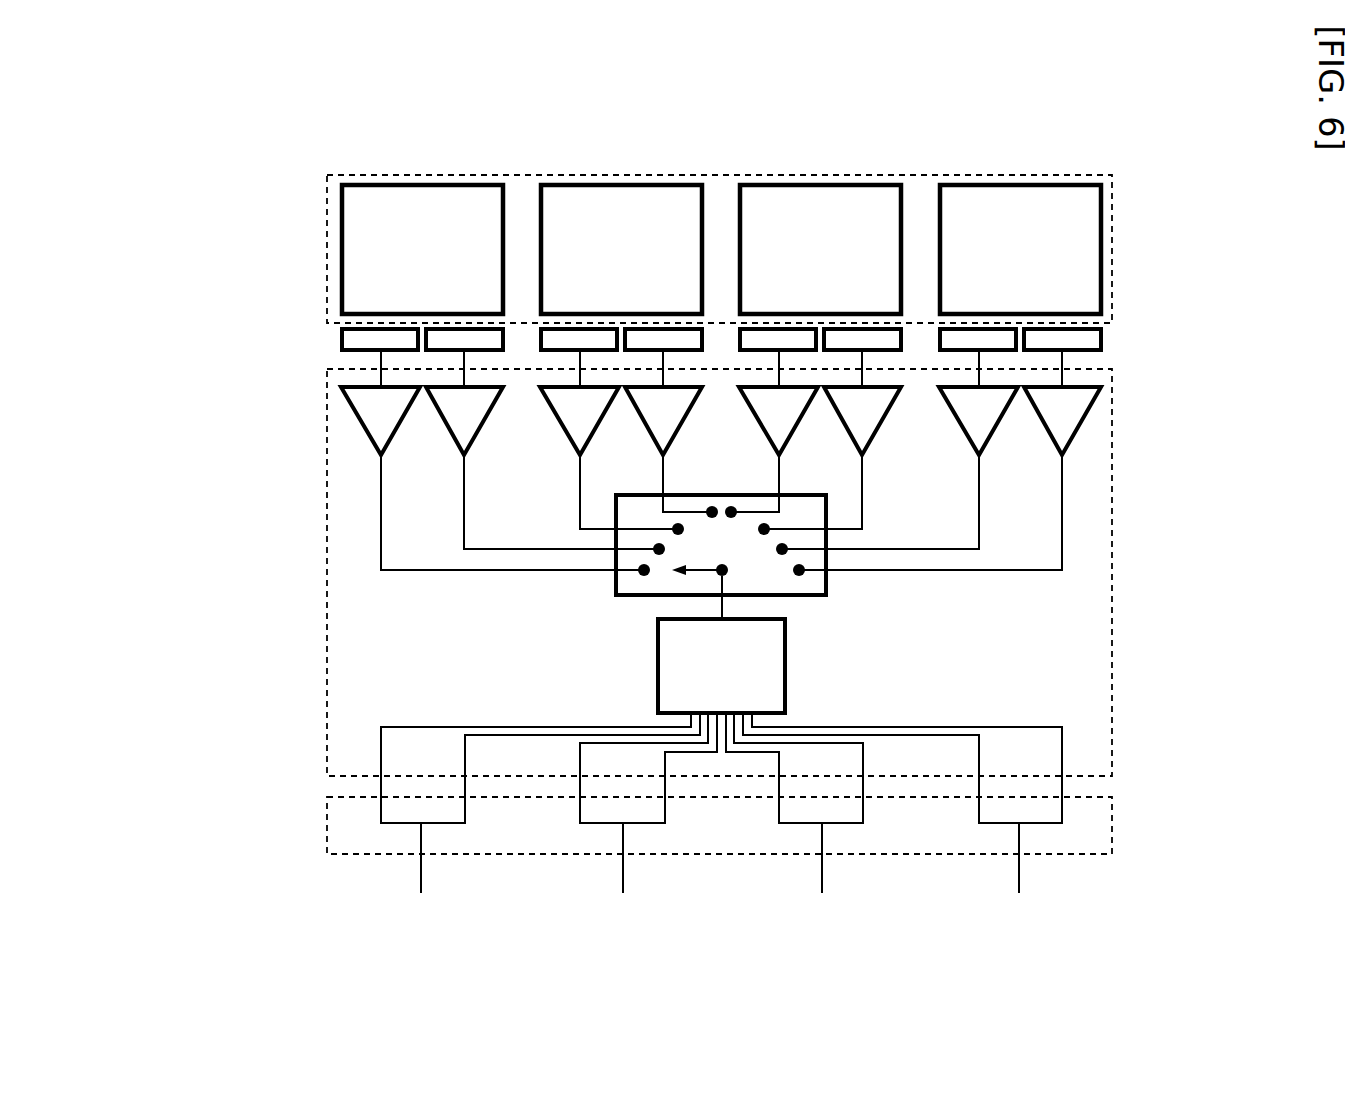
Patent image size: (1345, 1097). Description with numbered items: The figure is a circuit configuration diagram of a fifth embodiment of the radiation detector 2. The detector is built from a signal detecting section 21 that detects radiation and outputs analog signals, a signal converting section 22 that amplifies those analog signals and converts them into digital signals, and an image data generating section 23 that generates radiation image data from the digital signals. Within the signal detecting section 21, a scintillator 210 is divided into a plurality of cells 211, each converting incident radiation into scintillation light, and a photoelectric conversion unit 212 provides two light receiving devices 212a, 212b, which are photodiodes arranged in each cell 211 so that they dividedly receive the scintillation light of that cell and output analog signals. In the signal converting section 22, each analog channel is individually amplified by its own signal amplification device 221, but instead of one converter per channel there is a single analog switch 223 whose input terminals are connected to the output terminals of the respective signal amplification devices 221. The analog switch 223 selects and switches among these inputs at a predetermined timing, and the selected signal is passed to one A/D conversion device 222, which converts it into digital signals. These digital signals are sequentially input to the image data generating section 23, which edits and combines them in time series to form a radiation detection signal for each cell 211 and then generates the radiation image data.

The radiation detector 2 is at (1106, 148).
The signal detecting section 21 is at (214, 220).
The scintillator 210 is at (327, 263).
The cell 211 is at (447, 267).
The photoelectric conversion unit 212 is at (336, 330).
The light receiving device 212a is at (357, 353).
The light receiving device 212b is at (505, 340).
The signal converting section 22 is at (327, 630).
The signal amplification device 221 is at (357, 416).
The A/D conversion device 222 is at (747, 678).
The analog switch 223 is at (829, 579).
The image data generating section 23 is at (327, 806).